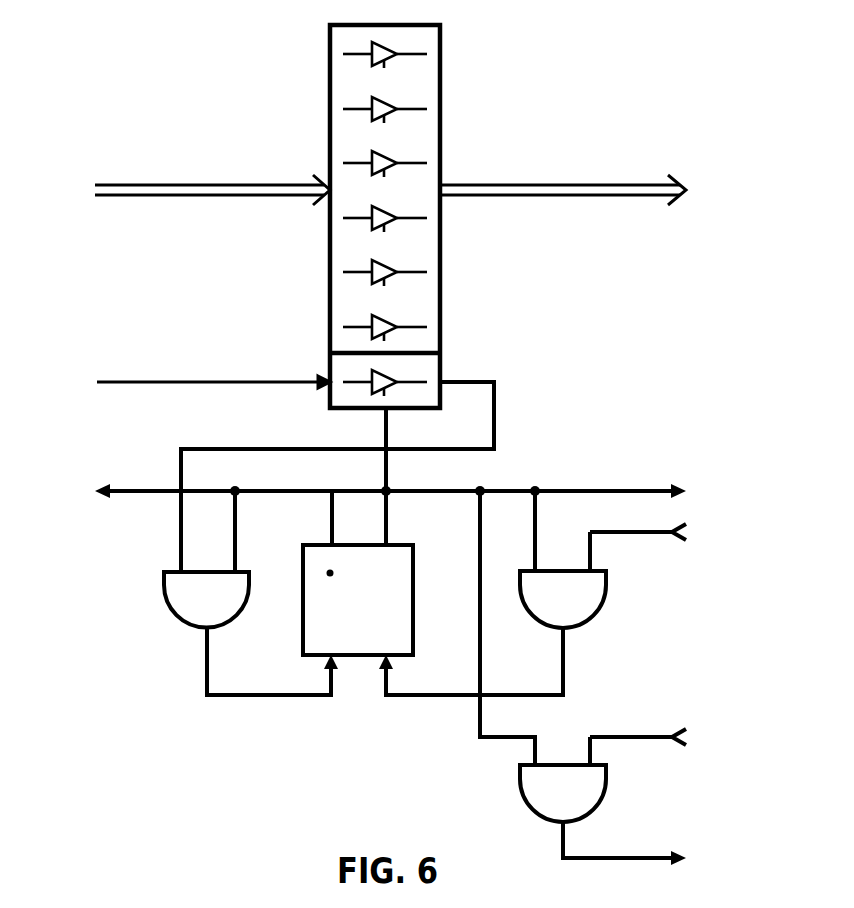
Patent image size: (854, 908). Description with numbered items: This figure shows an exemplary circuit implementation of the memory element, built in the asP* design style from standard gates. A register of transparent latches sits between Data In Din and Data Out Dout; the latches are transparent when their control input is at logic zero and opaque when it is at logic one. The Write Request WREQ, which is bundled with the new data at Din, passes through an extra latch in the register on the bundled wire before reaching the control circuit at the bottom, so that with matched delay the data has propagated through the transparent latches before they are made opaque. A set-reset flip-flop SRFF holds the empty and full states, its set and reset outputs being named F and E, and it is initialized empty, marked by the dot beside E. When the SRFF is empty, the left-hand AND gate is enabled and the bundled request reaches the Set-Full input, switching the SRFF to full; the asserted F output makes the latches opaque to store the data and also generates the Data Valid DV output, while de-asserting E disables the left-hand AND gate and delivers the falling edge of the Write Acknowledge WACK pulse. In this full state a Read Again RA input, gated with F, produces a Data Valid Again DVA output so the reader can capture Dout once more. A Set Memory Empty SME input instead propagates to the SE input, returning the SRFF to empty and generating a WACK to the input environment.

The Data In Din is at (196, 190).
The Data Out Dout is at (588, 190).
The Write Request WREQ is at (179, 383).
The Write Acknowledge WACK is at (208, 492).
The Data Valid DV is at (554, 492).
The Set Memory Empty SME is at (661, 547).
The Read Again RA is at (655, 746).
The Data Valid Again DVA is at (647, 843).
The set-reset flip-flop SRFF is at (358, 600).